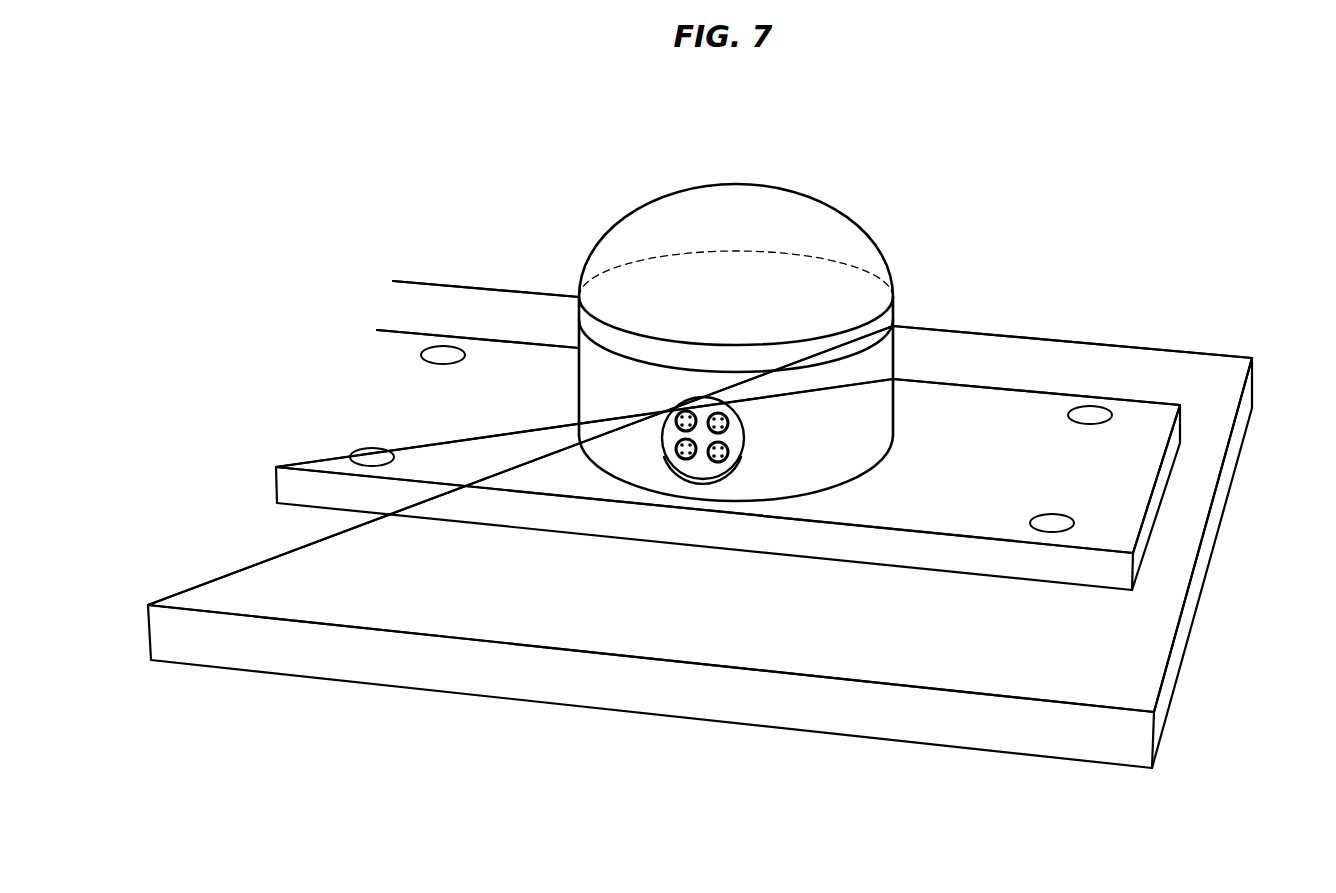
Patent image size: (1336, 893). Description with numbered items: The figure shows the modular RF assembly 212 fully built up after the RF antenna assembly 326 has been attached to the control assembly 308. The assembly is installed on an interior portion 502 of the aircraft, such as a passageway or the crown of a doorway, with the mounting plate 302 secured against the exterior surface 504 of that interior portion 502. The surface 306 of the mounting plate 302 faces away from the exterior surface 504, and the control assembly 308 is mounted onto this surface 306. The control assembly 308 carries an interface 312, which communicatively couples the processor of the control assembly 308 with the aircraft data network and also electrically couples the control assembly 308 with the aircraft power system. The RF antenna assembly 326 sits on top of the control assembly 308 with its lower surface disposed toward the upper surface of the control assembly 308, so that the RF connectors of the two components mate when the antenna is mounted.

The modular RF assembly 212 is at (521, 134).
The mounting plate 302 is at (1132, 400).
The surface of mounting plate 306 is at (364, 377).
The control assembly 308 is at (875, 412).
The interface 312 is at (738, 440).
The RF antenna assembly 326 is at (833, 222).
The interior portion of aircraft 502 is at (1190, 638).
The exterior surface of interior portion 504 is at (216, 551).